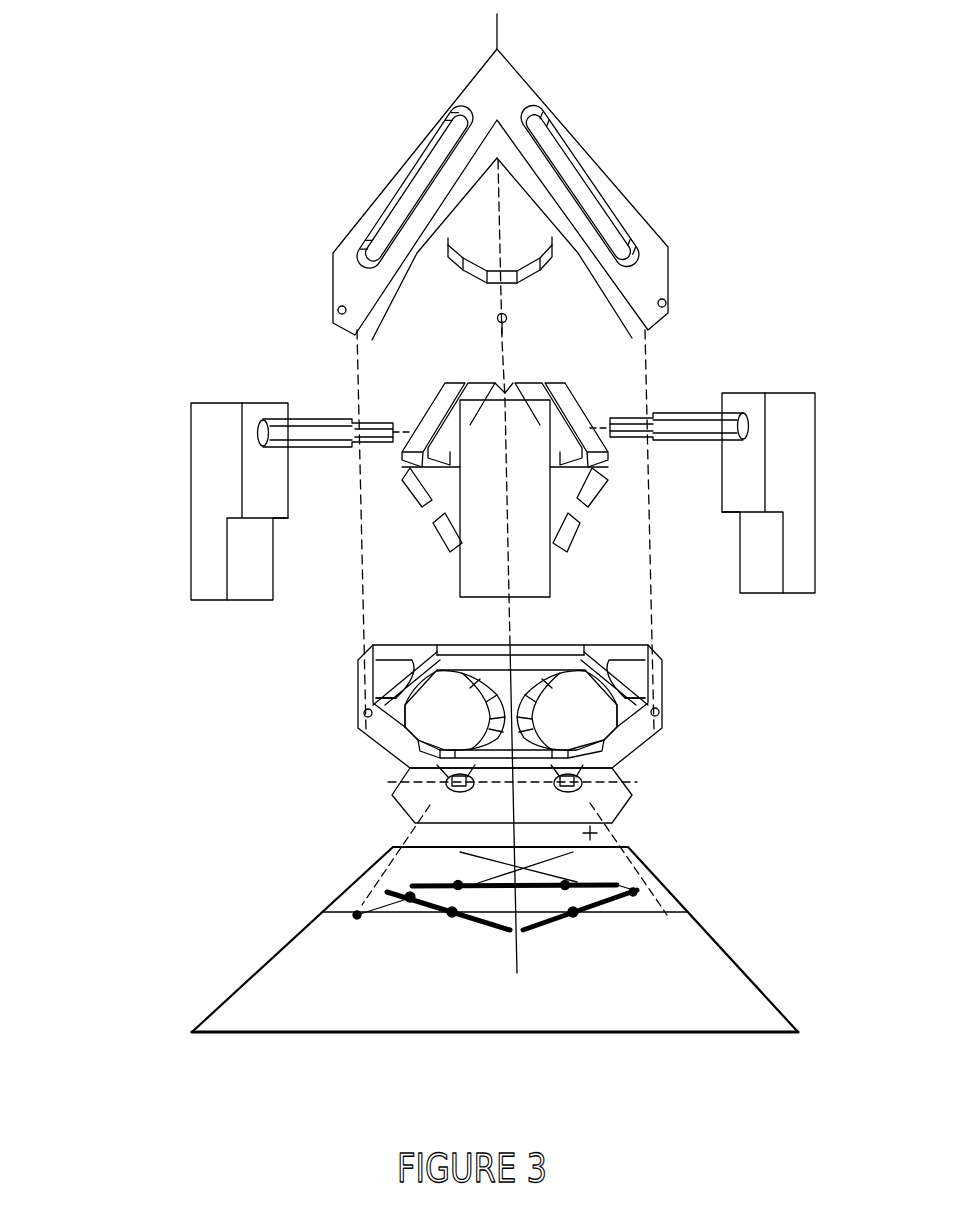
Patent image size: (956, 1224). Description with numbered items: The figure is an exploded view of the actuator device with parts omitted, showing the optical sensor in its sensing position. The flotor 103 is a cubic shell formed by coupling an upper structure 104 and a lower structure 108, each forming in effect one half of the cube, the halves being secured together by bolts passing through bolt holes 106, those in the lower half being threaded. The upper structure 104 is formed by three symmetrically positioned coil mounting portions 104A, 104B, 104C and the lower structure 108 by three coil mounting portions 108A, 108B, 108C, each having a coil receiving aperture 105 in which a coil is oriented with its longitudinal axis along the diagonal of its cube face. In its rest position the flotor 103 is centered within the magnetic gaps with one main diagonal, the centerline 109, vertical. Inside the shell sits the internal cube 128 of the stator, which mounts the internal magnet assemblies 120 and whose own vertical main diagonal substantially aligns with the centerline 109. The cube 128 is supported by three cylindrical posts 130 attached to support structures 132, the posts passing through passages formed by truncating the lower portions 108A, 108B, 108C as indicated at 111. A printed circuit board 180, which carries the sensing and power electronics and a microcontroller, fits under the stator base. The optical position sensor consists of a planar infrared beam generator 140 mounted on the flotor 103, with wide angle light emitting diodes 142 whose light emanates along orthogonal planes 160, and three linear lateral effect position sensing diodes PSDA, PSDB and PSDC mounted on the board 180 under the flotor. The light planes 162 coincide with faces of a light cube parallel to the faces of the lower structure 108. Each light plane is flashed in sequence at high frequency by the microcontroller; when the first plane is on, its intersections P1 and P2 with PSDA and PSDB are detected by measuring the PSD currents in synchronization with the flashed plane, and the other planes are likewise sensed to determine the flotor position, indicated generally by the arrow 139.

The flotor 103 is at (377, 180).
The upper structure 104 is at (518, 206).
The coil mounting portion 104A is at (568, 112).
The coil mounting portion 104B is at (478, 300).
The coil mounting portion 104C is at (423, 117).
The coil receiving aperture 105 is at (617, 212).
The bolt holes 106 is at (667, 300).
The lower structure 108 is at (546, 659).
The coil mounting portion 108A is at (638, 648).
The coil mounting portion 108B is at (492, 653).
The coil mounting portion 108C is at (383, 647).
The centerline 109 is at (497, 28).
The truncation 111 is at (362, 648).
The internal magnet assemblies 120 is at (572, 392).
The internal cube 128 is at (565, 503).
The cylindrical posts 130 is at (667, 412).
The support structures 132 is at (817, 477).
The coil assembly 139 is at (439, 823).
The planar infrared beam generator 140 is at (612, 805).
The light emitting diodes 142 is at (440, 780).
The orthogonal planes 160 is at (597, 833).
The light planes 162 is at (627, 915).
The printed circuit board 180 is at (333, 1035).
The position sensing diode A PSDA is at (492, 927).
The position sensing diode B PSDB is at (535, 927).
The position sensing diode C PSDC is at (413, 890).
The intersection P1 is at (452, 918).
The intersection P2 is at (573, 918).